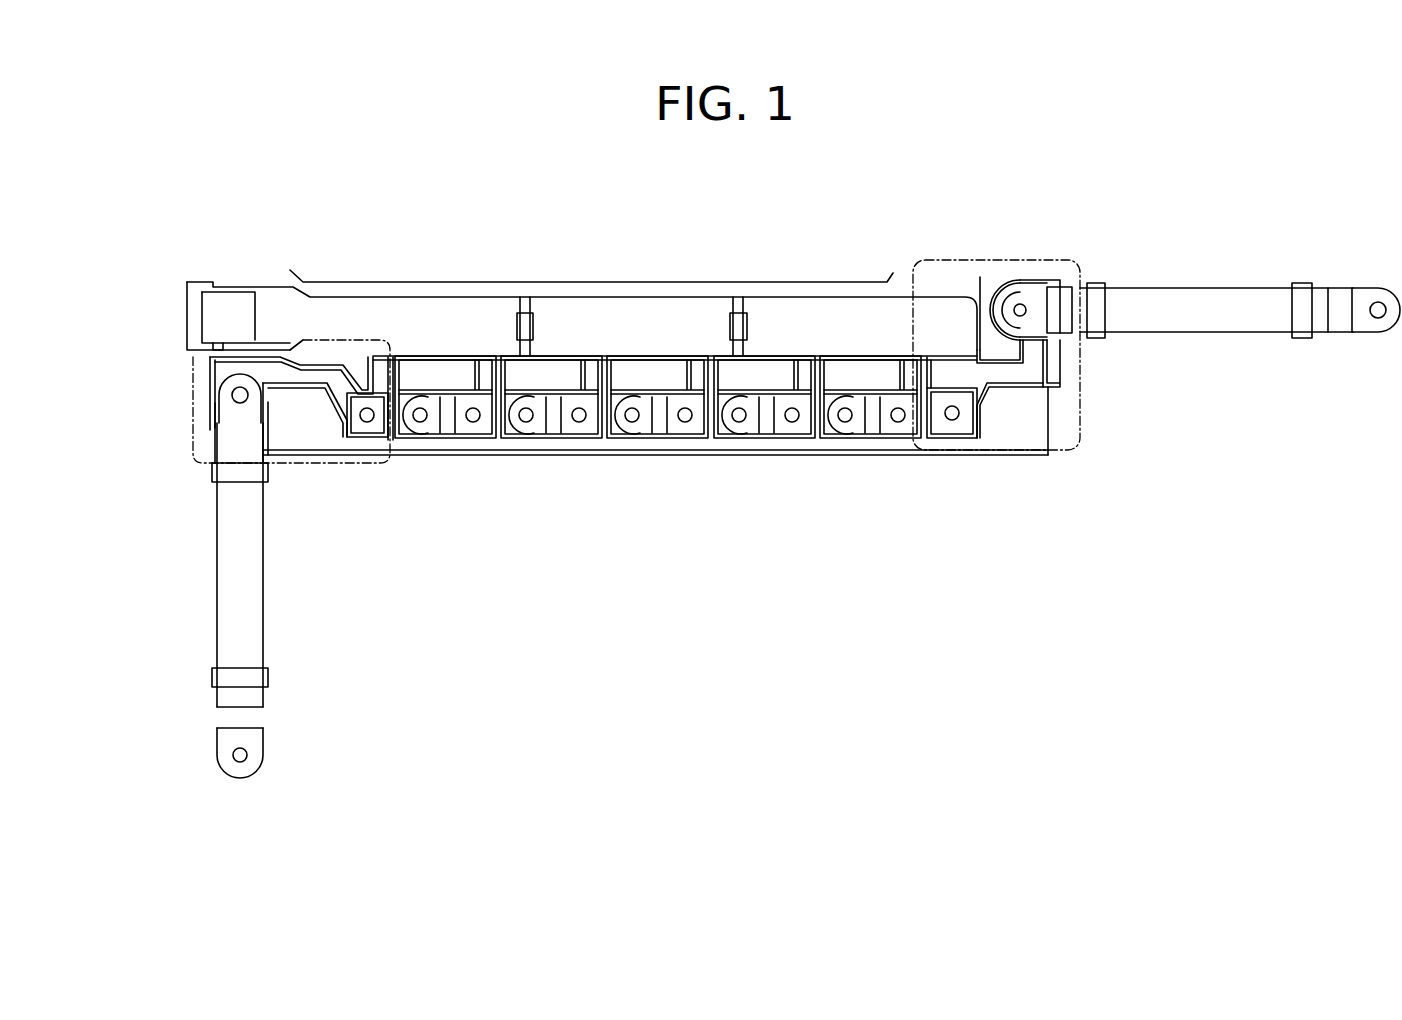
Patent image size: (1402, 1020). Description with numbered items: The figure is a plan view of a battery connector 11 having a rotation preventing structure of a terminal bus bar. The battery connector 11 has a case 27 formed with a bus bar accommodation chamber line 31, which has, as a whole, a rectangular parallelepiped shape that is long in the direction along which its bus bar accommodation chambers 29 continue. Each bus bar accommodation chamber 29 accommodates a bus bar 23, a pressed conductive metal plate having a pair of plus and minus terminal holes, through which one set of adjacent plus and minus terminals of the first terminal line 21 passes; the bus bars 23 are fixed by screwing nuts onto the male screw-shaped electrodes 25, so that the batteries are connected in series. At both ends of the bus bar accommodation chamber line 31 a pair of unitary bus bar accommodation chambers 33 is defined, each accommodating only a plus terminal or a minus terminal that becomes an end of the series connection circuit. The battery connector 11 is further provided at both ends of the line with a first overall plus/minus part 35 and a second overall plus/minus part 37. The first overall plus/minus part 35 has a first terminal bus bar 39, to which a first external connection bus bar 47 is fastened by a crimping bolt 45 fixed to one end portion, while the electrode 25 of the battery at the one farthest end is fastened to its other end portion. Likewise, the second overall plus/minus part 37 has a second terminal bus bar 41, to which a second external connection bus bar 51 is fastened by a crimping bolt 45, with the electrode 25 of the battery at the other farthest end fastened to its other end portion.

The battery connector 11 is at (198, 275).
The first terminal line 21 is at (935, 535).
The bus bar 23 is at (433, 430).
The electrode 25 is at (412, 417).
The case 27 is at (907, 455).
The bus bar accommodation chamber 29 is at (570, 397).
The bus bar accommodation chamber line 31 is at (995, 415).
The unitary bus bar accommodation chamber 33 is at (355, 440).
The first overall plus/minus part 35 is at (180, 452).
The second overall plus/minus part 37 is at (1095, 435).
The first terminal bus bar 39 is at (305, 372).
The second terminal bus bar 41 is at (978, 348).
The crimping bolt 45 is at (1020, 306).
The first external connection bus bar 47 is at (223, 583).
The second external connection bus bar 51 is at (1188, 284).